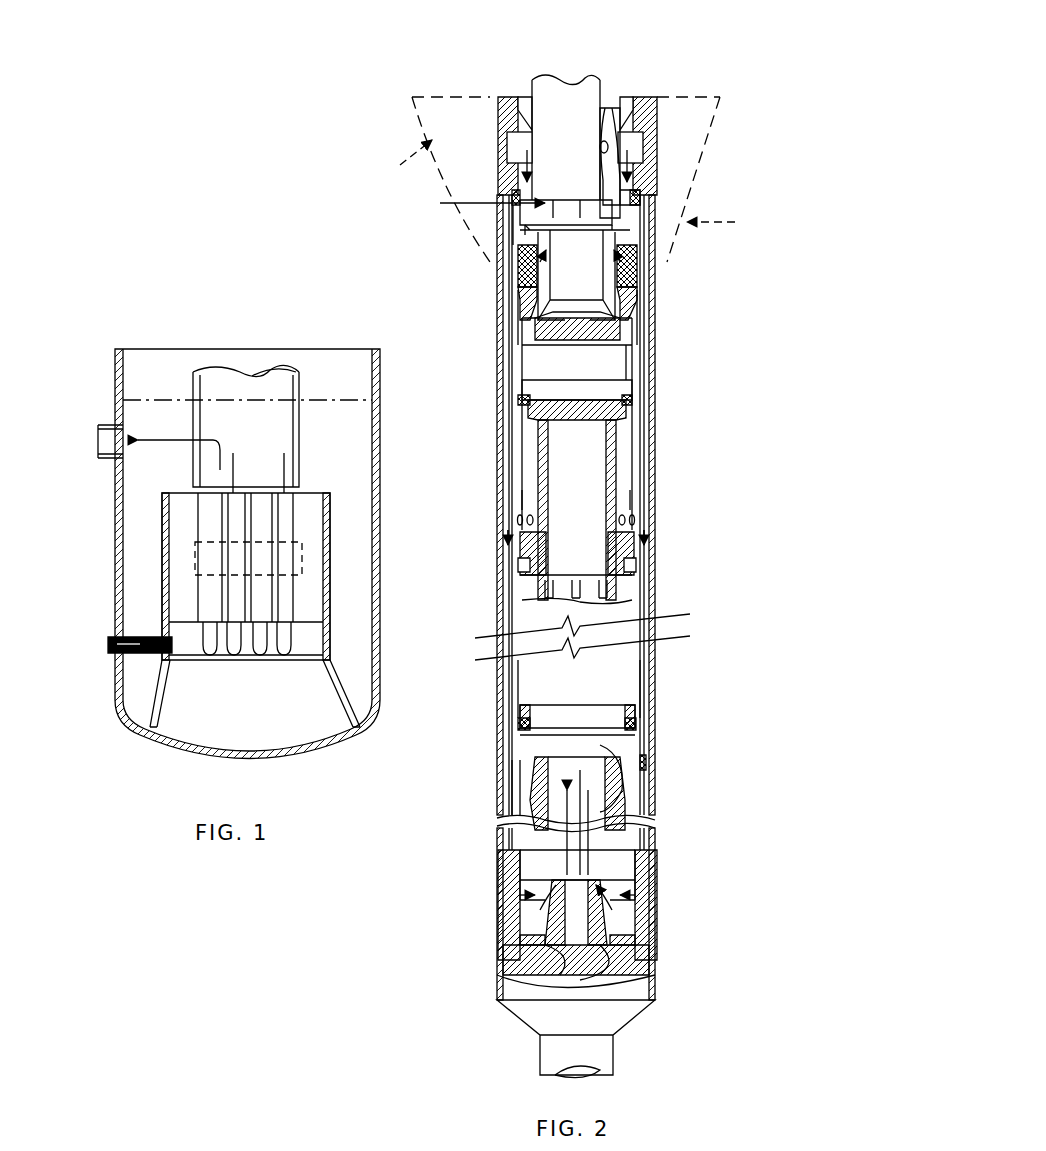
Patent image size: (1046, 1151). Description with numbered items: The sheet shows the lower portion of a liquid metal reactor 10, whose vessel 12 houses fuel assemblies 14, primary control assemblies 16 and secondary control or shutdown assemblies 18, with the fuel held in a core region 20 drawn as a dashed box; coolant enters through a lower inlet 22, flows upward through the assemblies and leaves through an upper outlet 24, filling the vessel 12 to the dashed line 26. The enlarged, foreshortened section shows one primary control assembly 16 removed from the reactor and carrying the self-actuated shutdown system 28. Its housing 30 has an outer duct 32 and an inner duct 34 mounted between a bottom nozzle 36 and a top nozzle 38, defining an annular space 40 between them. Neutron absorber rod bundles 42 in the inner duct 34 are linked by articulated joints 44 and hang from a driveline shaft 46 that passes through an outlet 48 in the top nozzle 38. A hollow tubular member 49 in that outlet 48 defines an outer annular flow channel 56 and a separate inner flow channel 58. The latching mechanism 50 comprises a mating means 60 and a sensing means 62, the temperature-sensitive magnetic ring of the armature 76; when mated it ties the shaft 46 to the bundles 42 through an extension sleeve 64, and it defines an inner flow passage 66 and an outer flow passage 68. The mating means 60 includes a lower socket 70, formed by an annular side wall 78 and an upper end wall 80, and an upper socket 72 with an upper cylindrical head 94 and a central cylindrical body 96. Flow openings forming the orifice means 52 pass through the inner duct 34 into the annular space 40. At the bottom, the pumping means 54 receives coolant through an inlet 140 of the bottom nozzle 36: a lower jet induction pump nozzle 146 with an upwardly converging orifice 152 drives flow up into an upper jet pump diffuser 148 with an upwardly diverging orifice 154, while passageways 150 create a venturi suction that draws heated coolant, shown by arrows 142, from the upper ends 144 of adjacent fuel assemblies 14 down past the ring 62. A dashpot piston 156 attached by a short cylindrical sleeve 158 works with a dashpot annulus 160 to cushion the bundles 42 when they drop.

In FIG. 1, the LMR 10 is at (103, 333).
In FIG. 1, the vessel 12 is at (372, 580).
In FIG. 1, the fuel assemblies 14 is at (212, 608).
In FIG. 2, the fuel assemblies 14 is at (571, 189).
In FIG. 1, the primary control assemblies 16 is at (233, 503).
In FIG. 2, the primary control assemblies 16 is at (488, 994).
In FIG. 1, the secondary control or shutdown assemblies 18 is at (290, 518).
In FIG. 1, the core region 20 is at (303, 567).
In FIG. 1, the lower inlet 22 is at (140, 653).
In FIG. 1, the upper outlet 24 is at (107, 460).
In FIG. 1, the coolant level line 26 is at (325, 400).
In FIG. 2, the self-actuated shutdown system 28 is at (662, 338).
In FIG. 2, the housing 30 is at (660, 707).
In FIG. 2, the outer duct 32 is at (657, 780).
In FIG. 2, the inner duct 34 is at (646, 800).
In FIG. 2, the bottom nozzle 36 is at (657, 993).
In FIG. 2, the top nozzle 38 is at (652, 118).
In FIG. 2, the annular space 40 is at (505, 697).
In FIG. 2, the neutron absorber rod bundles 42 is at (625, 620).
In FIG. 2, the articulated joints 44 is at (625, 565).
In FIG. 2, the driveline shaft 46 is at (600, 147).
In FIG. 2, the outlet 48 is at (532, 128).
In FIG. 2, the hollow tubular member 49 is at (630, 190).
In FIG. 2, the latching mechanism 50 is at (553, 196).
In FIG. 2, the orifice means 52 is at (520, 523).
In FIG. 2, the pumping means 54 is at (640, 880).
In FIG. 2, the outer annular flow channel 56 is at (627, 126).
In FIG. 2, the inner flow channel 58 is at (610, 126).
In FIG. 2, the mating means 60 is at (580, 348).
In FIG. 2, the sensing means 62 is at (620, 262).
In FIG. 2, the extension sleeve 64 is at (616, 462).
In FIG. 2, the inner flow passage 66 is at (545, 262).
In FIG. 2, the outer flow passage 68 is at (520, 288).
In FIG. 2, the lower socket 70 is at (592, 348).
In FIG. 2, the upper socket 72 is at (513, 210).
In FIG. 2, the armature 76 is at (628, 307).
In FIG. 2, the annular side wall 78 is at (634, 358).
In FIG. 2, the upper end wall 80 is at (590, 346).
In FIG. 2, the upper cylindrical head 94 is at (540, 218).
In FIG. 2, the central cylindrical body 96 is at (575, 322).
In FIG. 2, the inlet 140 is at (640, 975).
In FIG. 2, the arrows 142 is at (520, 88).
In FIG. 2, the upper ends 144 is at (443, 90).
In FIG. 2, the lower jet induction pump nozzle 146 is at (605, 935).
In FIG. 2, the upper jet pump diffuser 148 is at (535, 770).
In FIG. 2, the passageways 150 is at (520, 918).
In FIG. 2, the upwardly converging orifice 152 is at (570, 952).
In FIG. 2, the upwardly diverging orifice 154 is at (605, 762).
In FIG. 2, the dashpot piston 156 is at (525, 735).
In FIG. 2, the short cylindrical sleeve 158 is at (520, 672).
In FIG. 2, the dashpot annulus 160 is at (520, 805).